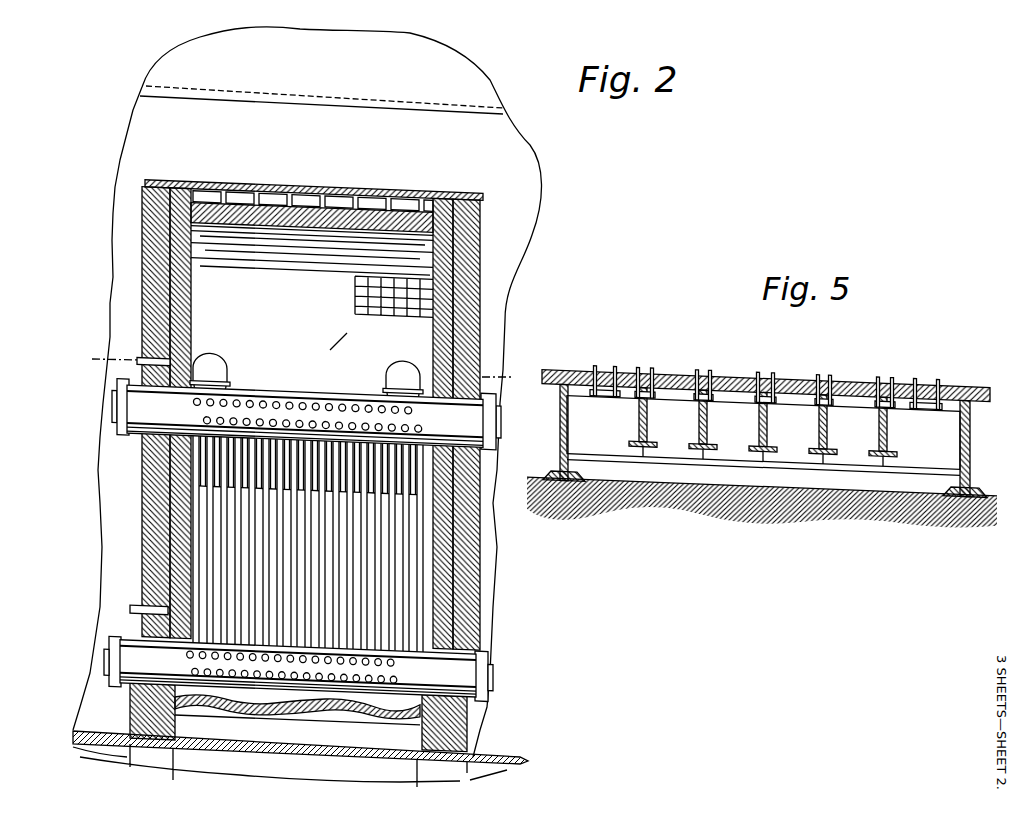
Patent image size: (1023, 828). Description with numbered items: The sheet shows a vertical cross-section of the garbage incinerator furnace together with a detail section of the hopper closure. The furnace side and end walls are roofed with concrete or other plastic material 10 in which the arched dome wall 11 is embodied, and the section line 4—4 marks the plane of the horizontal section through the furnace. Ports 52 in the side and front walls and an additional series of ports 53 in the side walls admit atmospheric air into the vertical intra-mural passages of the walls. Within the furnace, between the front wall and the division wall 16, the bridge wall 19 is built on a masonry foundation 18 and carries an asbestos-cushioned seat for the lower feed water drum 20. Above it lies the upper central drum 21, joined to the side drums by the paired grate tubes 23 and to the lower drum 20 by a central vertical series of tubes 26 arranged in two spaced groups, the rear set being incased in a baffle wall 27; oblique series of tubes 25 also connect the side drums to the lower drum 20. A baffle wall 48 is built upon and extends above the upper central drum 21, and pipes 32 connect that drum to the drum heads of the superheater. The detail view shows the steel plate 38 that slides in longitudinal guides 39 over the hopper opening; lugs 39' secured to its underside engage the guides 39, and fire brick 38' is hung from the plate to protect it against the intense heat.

In FIG. 2, the concrete or plastic roofing material 10 is at (205, 190).
In FIG. 2, the arched dome wall 11 is at (257, 225).
In FIG. 2, the ports 52 is at (150, 366).
In FIG. 2, the pipe 32 is at (398, 360).
In FIG. 2, the baffle wall 48 is at (320, 346).
In FIG. 2, the central vertical series of tubes 26 is at (235, 488).
In FIG. 2, the baffle wall 27 is at (233, 477).
In FIG. 2, the division wall 16 is at (170, 384).
In FIG. 2, the central drum 21 is at (295, 398).
In FIG. 2, the tubes 23 is at (248, 425).
In FIG. 2, the ports 53 is at (132, 603).
In FIG. 2, the oblique tubes 25 is at (187, 653).
In FIG. 2, the lower feed water drum 20 is at (248, 682).
In FIG. 2, the bridge wall 19 is at (316, 705).
In FIG. 2, the foundation 18 is at (300, 755).
In FIG. 2, the section line 4— 4 is at (300, 367).
In FIG. 5, the longitudinal guides 39 is at (766, 441).
In FIG. 5, the fire brick 38' is at (763, 409).
In FIG. 5, the steel plate 38 is at (766, 407).
In FIG. 5, the lugs 39' is at (777, 368).